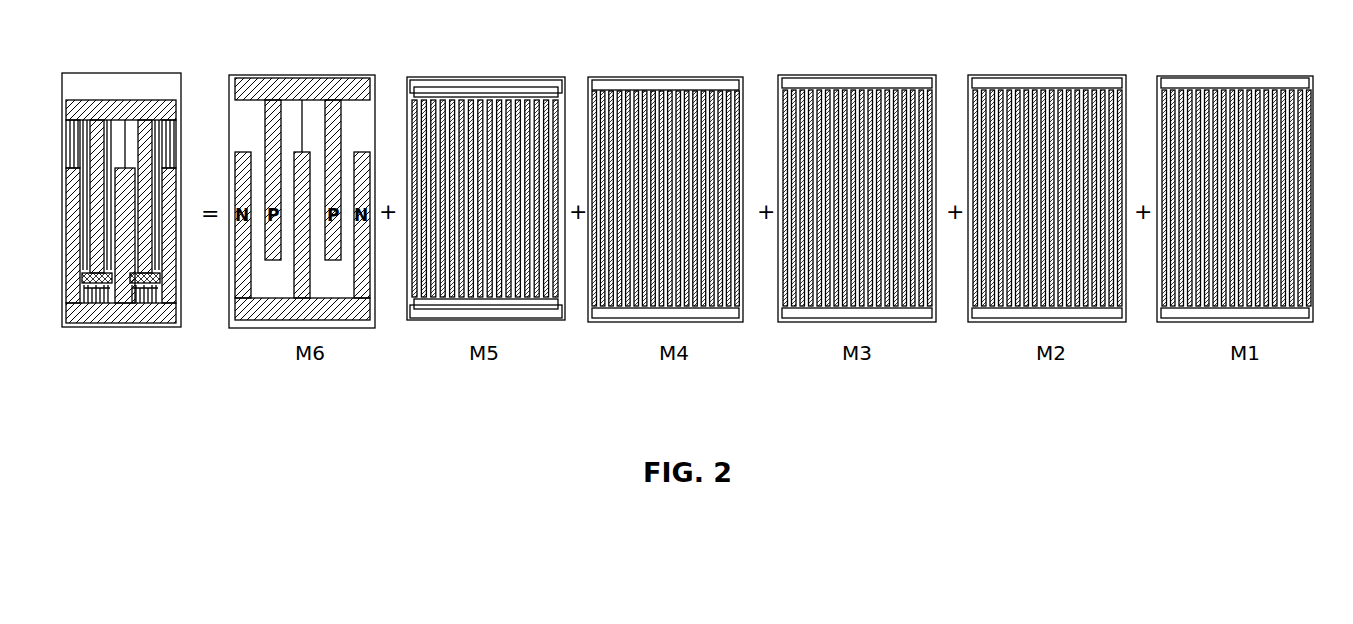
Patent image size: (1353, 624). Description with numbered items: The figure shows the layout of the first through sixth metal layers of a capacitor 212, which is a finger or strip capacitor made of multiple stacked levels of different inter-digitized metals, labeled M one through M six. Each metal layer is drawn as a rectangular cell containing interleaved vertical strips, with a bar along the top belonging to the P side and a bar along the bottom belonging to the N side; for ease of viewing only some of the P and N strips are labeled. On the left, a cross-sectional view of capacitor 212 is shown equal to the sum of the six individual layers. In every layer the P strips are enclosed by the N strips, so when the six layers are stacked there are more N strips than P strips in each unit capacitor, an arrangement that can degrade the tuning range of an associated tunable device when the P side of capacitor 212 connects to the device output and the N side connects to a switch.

The capacitor 212 is at (140, 218).